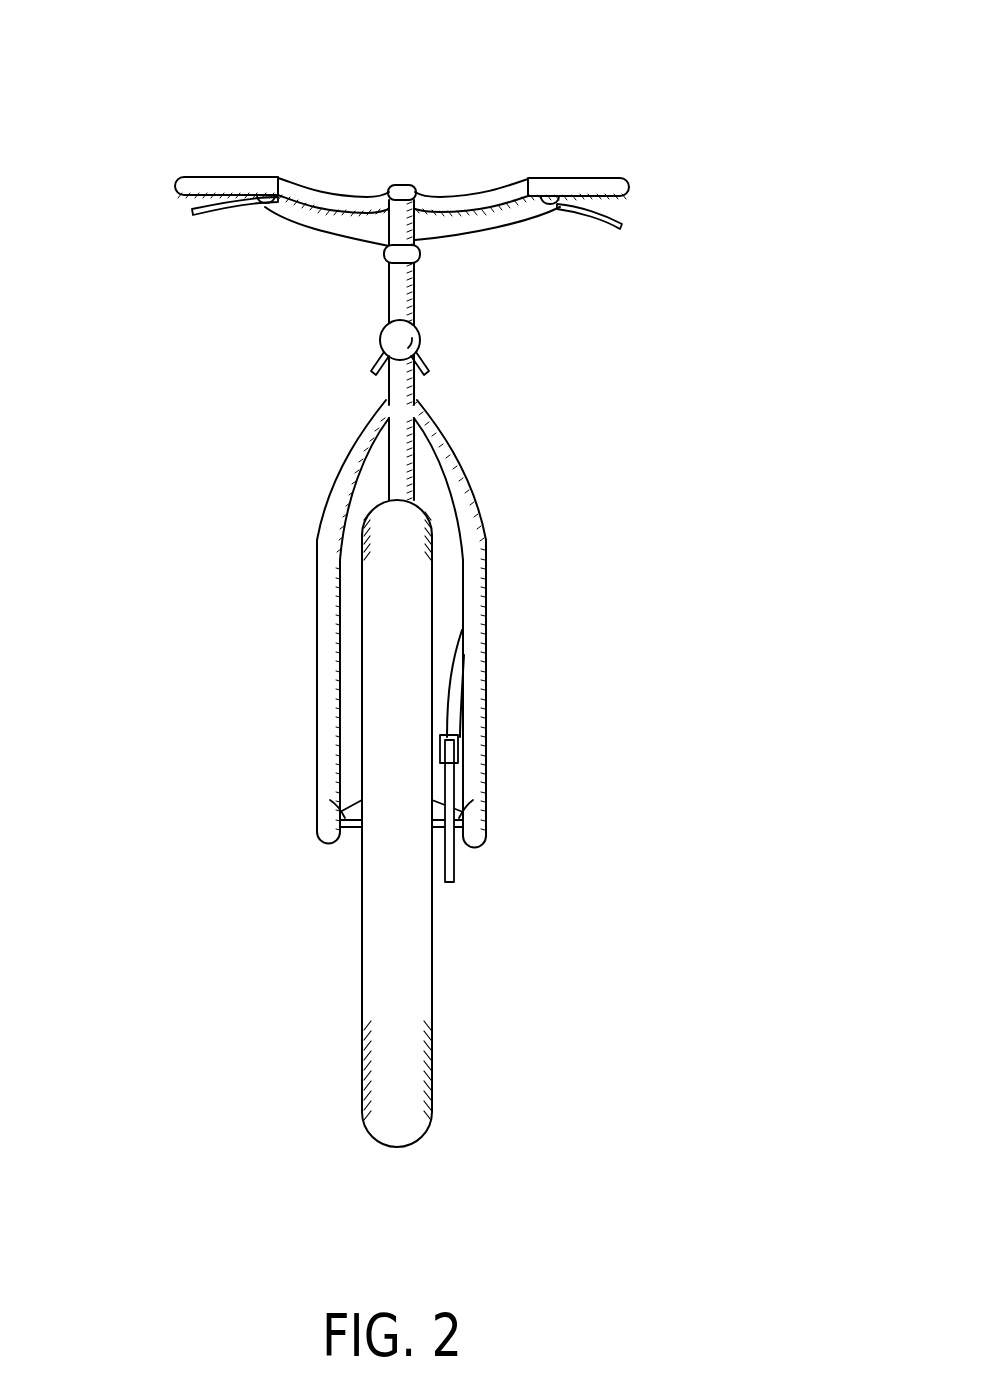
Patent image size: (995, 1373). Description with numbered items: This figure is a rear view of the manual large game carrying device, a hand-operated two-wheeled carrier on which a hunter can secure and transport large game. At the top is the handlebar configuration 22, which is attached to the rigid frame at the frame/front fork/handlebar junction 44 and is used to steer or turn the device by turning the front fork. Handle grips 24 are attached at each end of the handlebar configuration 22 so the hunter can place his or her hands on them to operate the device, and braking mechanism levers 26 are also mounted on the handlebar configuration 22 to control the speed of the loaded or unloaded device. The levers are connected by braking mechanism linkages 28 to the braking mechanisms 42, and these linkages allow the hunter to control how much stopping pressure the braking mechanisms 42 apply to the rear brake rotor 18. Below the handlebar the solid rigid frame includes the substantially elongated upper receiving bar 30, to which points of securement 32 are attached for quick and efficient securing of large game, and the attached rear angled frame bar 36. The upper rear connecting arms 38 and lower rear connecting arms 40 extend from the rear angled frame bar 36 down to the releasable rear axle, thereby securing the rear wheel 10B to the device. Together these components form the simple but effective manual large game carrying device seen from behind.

The rear wheel 10B is at (432, 1003).
The rear brake rotor 18 is at (458, 864).
The handlebar configuration 22 is at (398, 184).
The handle grips 24 is at (210, 177).
The braking mechanism levers 26 is at (203, 215).
The braking mechanism linkages 28 is at (503, 225).
The substantially elongated upper receiving bar 30 is at (420, 338).
The points of securement 32 is at (365, 363).
The rear angled frame bar 36 is at (360, 392).
The upper rear connecting arms 38 is at (318, 526).
The lower rear connecting arms 40 is at (357, 800).
The braking mechanisms 42 is at (466, 738).
The frame/front fork/handlebar junction 44 is at (387, 287).